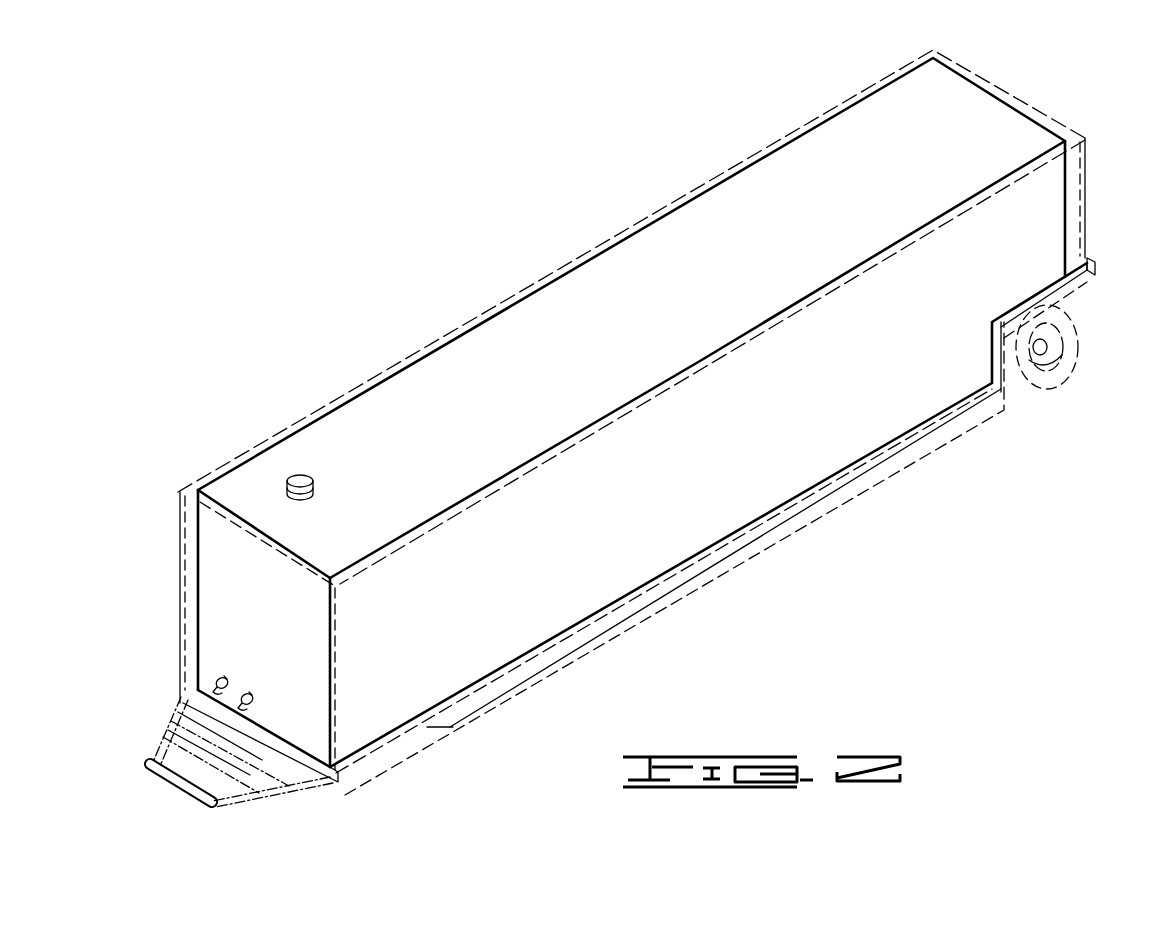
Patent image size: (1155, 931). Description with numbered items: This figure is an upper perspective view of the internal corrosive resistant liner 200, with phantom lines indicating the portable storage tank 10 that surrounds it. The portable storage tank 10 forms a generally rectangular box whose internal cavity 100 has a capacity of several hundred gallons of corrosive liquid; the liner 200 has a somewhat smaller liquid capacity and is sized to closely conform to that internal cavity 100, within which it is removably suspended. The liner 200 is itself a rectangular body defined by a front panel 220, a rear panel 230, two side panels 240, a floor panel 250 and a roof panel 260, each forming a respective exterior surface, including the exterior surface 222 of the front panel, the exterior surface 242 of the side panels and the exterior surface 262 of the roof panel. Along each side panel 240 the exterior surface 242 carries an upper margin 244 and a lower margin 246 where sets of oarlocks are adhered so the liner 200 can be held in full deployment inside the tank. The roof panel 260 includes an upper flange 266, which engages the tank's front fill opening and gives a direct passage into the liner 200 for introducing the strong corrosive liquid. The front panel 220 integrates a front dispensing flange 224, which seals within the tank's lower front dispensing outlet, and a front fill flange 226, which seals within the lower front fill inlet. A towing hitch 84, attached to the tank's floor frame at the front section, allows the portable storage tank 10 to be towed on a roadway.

The portable storage tank 10 is at (483, 312).
The towing hitch 84 is at (293, 793).
The internal cavity 100 is at (187, 523).
The internal corrosive resistant liner 200 is at (928, 421).
The front panel 220 is at (228, 622).
The exterior surface 222 is at (213, 558).
The front dispensing flange 224 is at (182, 697).
The front fill flange 226 is at (237, 708).
The rear panel 230 is at (1000, 95).
The side panels 240 is at (645, 550).
The exterior surface 242 is at (702, 453).
The upper margin 244 is at (1010, 190).
The lower margin 246 is at (838, 455).
The floor panel 250 is at (537, 646).
The roof panel 260 is at (402, 412).
The exterior surface 262 is at (704, 244).
The upper flange 266 is at (299, 473).